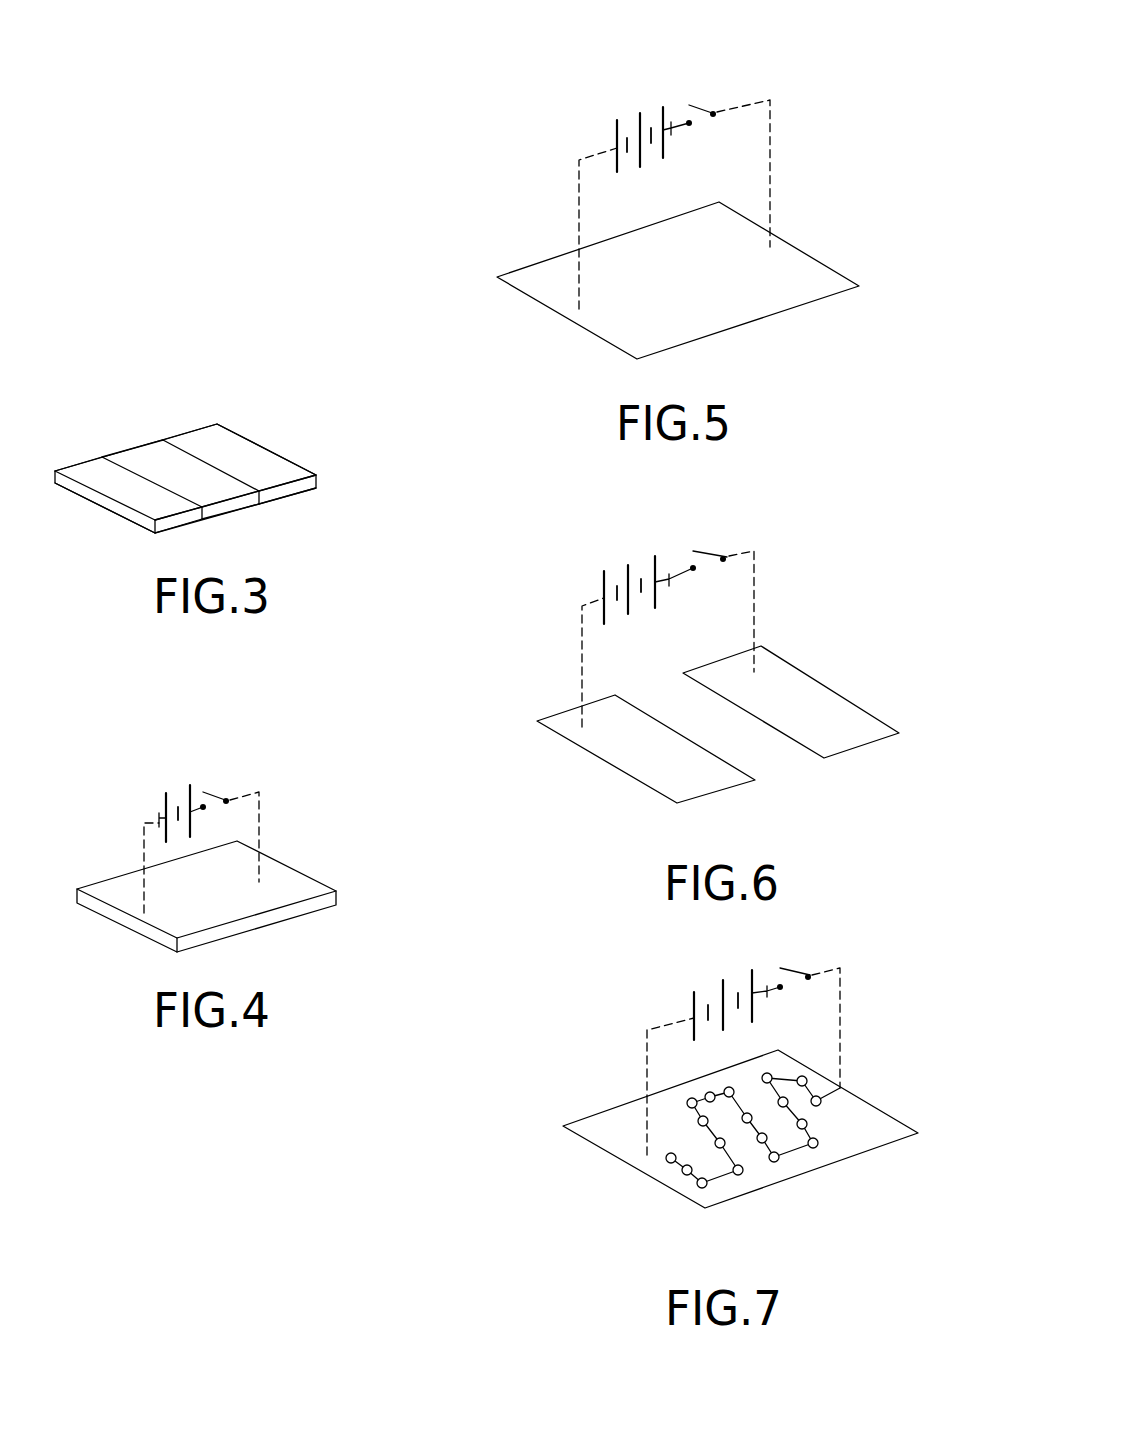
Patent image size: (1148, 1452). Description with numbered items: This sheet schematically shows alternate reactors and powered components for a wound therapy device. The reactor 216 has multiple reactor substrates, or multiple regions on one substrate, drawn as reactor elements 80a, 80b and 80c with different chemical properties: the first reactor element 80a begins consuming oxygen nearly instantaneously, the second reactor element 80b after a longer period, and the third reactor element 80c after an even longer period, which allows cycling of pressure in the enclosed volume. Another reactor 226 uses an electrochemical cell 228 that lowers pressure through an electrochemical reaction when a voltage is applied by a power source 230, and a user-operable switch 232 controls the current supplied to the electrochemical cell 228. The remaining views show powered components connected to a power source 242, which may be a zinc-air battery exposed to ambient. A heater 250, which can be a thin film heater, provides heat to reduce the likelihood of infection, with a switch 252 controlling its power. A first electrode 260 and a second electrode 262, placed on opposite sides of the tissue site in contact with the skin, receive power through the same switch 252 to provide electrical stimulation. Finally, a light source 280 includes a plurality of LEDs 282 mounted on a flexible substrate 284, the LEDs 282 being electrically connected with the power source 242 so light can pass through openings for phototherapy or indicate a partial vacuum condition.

In FIG. 3, the first reactor element 80a is at (88, 470).
In FIG. 3, the second reactor element 80b is at (157, 452).
In FIG. 3, the third reactor element 80c is at (225, 447).
In FIG. 3, the reactor 216 is at (227, 438).
In FIG. 4, the reactor 226 is at (235, 818).
In FIG. 4, the electrochemical cell 228 is at (118, 890).
In FIG. 4, the power source 230 is at (178, 798).
In FIG. 4, the switch 232 is at (224, 779).
In FIG. 5, the power source 242 is at (628, 123).
In FIG. 6, the power source 242 is at (616, 568).
In FIG. 5, the heater 250 is at (546, 272).
In FIG. 5, the switch 252 is at (719, 97).
In FIG. 6, the switch 252 is at (726, 538).
In FIG. 6, the first electrode 260 is at (608, 745).
In FIG. 6, the second electrode 262 is at (813, 706).
In FIG. 7, the light source 280 is at (744, 1108).
In FIG. 7, the LEDs 282 is at (793, 1148).
In FIG. 7, the flexible substrate 284 is at (607, 1127).